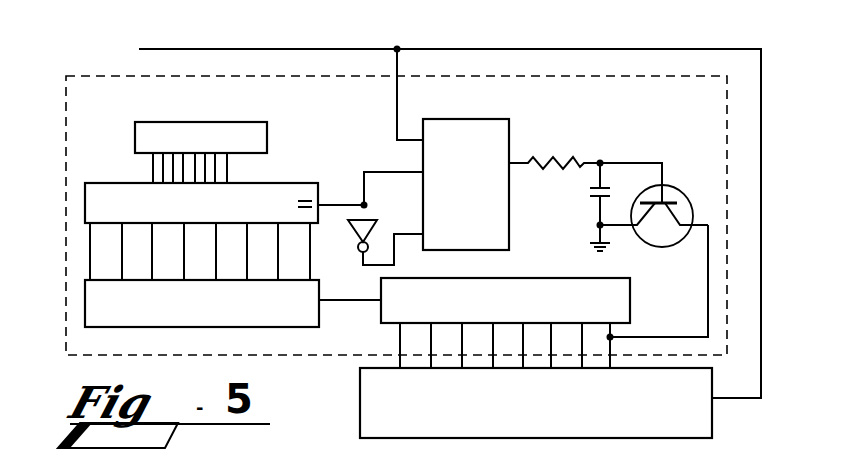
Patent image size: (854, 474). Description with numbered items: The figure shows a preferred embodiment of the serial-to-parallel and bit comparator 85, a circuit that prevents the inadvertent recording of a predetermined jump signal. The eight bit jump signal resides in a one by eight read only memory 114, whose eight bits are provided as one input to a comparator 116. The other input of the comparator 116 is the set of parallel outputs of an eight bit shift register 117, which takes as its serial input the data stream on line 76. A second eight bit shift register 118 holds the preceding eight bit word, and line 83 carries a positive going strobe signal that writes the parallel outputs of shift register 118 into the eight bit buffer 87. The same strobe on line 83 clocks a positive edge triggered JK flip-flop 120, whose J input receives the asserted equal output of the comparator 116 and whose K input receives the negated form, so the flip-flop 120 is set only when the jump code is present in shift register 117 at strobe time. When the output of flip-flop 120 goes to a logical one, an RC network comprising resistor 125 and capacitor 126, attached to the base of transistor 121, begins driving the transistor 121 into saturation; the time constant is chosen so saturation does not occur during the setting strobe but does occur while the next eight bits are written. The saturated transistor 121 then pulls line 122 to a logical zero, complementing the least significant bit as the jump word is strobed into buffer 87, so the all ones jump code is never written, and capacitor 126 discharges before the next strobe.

The line 76 is at (83, 303).
The line 83 is at (364, 48).
The serial-to-parallel and bit comparator 85 is at (66, 148).
The eight bit buffer 87 is at (360, 403).
The one by eight read only memory 114 is at (268, 135).
The comparator 116 is at (290, 183).
The eight bit shift register 117 is at (231, 327).
The eight bit shift register 118 is at (528, 279).
The JK flip-flop 120 is at (489, 118).
The transistor 121 is at (674, 188).
The line 122 is at (708, 258).
The resistor 125 is at (557, 158).
The capacitor 126 is at (597, 199).